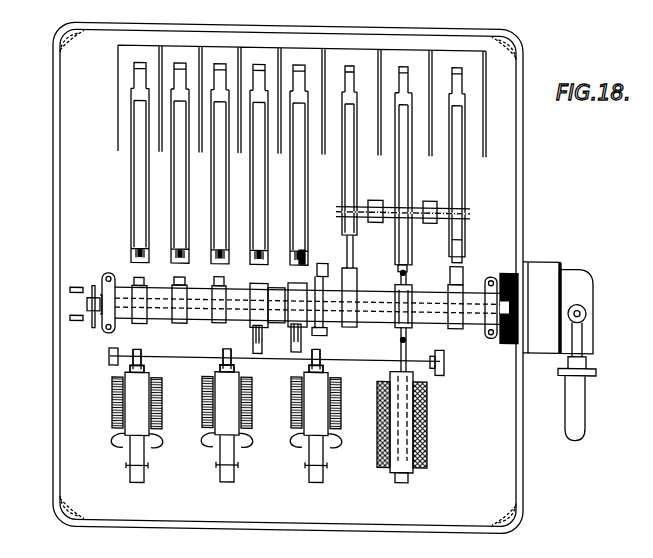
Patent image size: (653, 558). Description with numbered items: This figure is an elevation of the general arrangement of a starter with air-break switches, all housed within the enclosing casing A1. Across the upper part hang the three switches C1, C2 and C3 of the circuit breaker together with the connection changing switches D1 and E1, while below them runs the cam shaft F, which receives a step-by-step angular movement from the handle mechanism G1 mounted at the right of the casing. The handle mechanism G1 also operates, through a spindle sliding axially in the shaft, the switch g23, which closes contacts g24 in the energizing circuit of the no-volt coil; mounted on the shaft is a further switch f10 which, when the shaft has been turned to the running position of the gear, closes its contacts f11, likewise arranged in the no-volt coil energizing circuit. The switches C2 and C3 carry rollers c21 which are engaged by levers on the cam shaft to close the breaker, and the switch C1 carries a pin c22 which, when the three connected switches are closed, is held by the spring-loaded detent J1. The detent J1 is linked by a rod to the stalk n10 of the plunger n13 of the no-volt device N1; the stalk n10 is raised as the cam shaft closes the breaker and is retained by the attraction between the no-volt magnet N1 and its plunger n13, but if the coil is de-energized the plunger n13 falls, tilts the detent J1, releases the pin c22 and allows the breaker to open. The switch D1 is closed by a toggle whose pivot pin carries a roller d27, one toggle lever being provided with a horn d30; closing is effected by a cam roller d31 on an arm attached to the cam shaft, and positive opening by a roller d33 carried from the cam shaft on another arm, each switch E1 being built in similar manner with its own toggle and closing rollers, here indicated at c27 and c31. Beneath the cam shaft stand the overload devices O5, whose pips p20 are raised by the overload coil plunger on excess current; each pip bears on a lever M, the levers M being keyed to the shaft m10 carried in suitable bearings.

The enclosing casing A1 is at (524, 170).
The connection changing switch E1 is at (168, 184).
The connection changing switch D1 is at (294, 174).
The circuit breaker switch C1 is at (347, 170).
The circuit breaker switch C2 is at (399, 168).
The circuit breaker switch C3 is at (460, 164).
The roller d27 is at (271, 254).
The horn d30 is at (299, 254).
The cam roller d31 is at (279, 289).
The roller d33 is at (286, 346).
The switch f10 is at (326, 319).
The contacts f11 is at (464, 263).
The pin c22 is at (404, 259).
The roller c21 is at (464, 239).
The collar c27 is at (141, 263).
The collar c31 is at (217, 281).
The detent J1 is at (408, 270).
The stalk n10 is at (408, 339).
The plunger n13 is at (404, 457).
The cam shaft F is at (442, 311).
The handle mechanism G1 is at (579, 324).
The contacts g24 is at (52, 310).
The switch g23 is at (92, 325).
The lever M is at (140, 349).
The shaft m10 is at (176, 353).
The plunger neck p20 is at (127, 362).
The overload device O5 is at (134, 423).
The no-volt device N1 is at (428, 401).